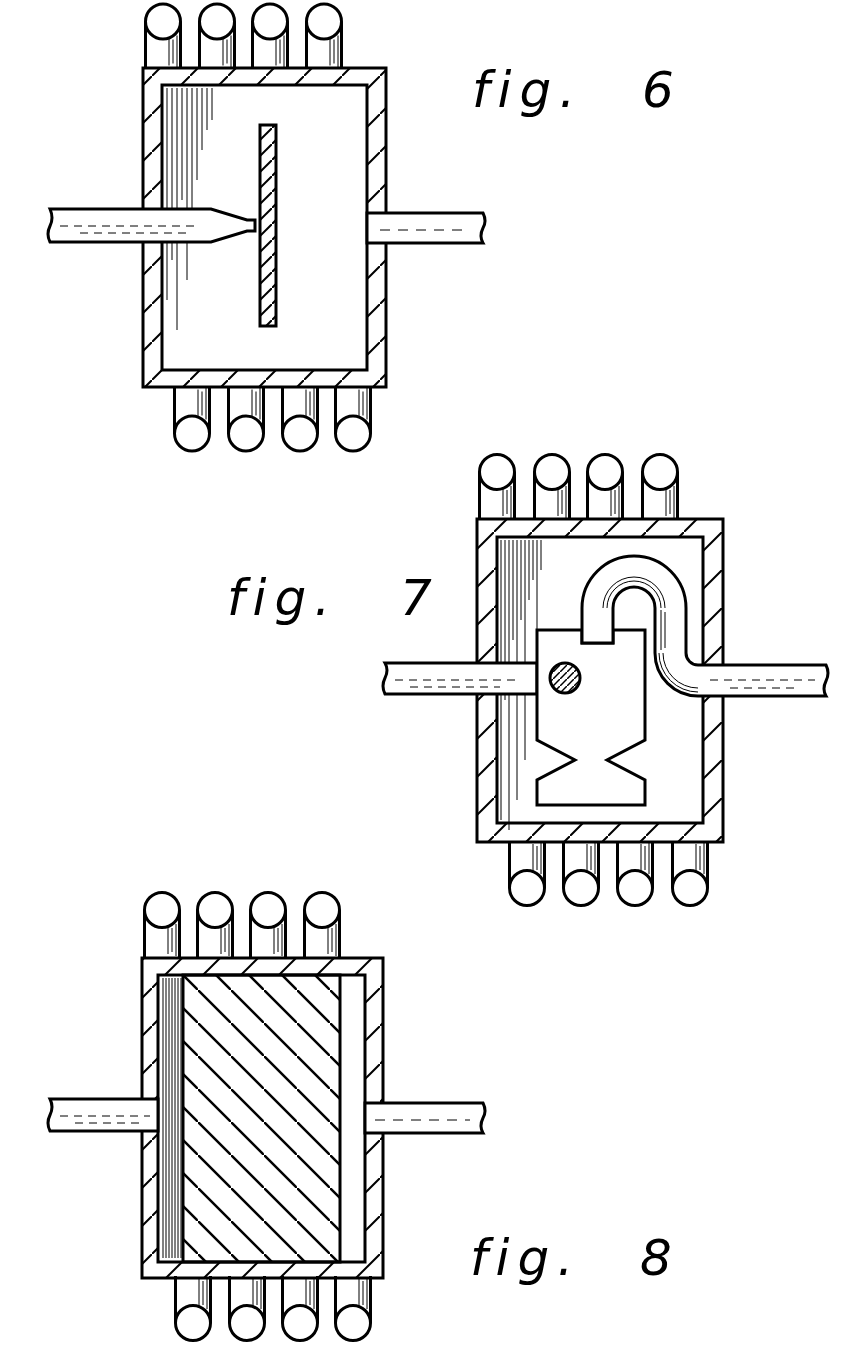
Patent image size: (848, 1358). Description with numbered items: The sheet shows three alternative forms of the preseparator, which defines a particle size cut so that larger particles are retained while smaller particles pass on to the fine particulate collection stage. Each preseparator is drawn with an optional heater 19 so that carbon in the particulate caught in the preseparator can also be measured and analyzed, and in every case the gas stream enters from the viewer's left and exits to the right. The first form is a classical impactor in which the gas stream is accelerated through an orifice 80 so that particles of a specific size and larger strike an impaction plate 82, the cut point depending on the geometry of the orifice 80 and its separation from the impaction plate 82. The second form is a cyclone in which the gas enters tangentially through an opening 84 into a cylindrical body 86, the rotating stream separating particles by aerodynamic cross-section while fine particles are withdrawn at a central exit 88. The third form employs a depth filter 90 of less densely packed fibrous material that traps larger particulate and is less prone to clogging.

In FIG. 6, the heater 19 is at (147, 15).
In FIG. 7, the heater 19 is at (665, 455).
In FIG. 8, the heater 19 is at (143, 913).
In FIG. 6, the orifice 80 is at (247, 232).
In FIG. 6, the impaction plate 82 is at (277, 250).
In FIG. 7, the opening 84 is at (563, 694).
In FIG. 7, the cylindrical body 86 is at (645, 717).
In FIG. 7, the exit 88 is at (582, 621).
In FIG. 8, the depth filter 90 is at (202, 1123).